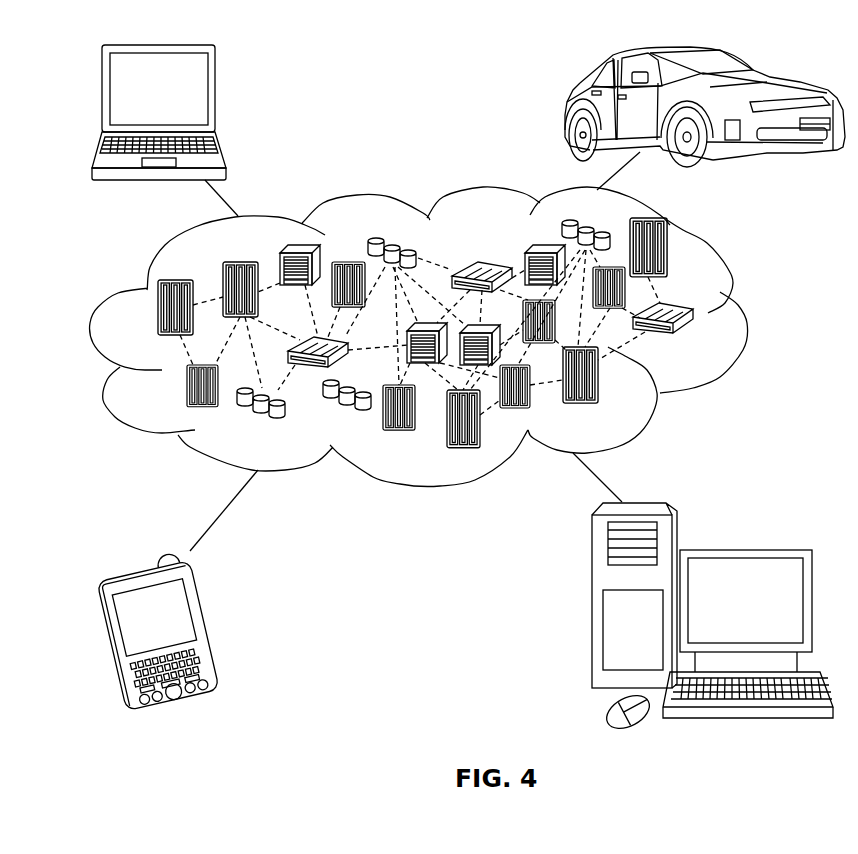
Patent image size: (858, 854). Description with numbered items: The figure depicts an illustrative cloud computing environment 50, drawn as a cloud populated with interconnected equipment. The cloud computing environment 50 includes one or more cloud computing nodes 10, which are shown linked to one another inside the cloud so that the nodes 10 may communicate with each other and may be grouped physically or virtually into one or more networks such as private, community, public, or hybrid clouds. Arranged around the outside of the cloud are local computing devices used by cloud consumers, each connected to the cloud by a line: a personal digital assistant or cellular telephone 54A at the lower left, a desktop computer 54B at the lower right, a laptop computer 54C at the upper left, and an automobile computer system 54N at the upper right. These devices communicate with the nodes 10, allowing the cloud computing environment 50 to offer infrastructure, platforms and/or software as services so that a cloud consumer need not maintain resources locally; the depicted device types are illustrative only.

The cloud computing node 10 is at (705, 343).
The cloud computing environment 50 is at (443, 337).
The personal digital assistant or cellular telephone 54A is at (208, 624).
The desktop computer 54B is at (745, 548).
The laptop computer 54C is at (217, 95).
The automobile computer system 54N is at (567, 108).